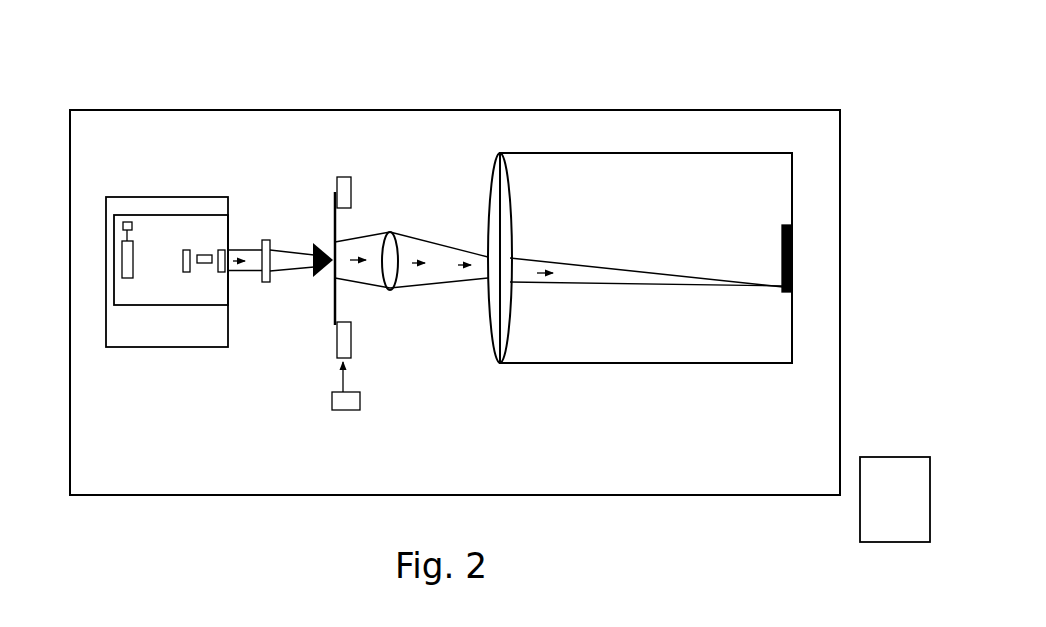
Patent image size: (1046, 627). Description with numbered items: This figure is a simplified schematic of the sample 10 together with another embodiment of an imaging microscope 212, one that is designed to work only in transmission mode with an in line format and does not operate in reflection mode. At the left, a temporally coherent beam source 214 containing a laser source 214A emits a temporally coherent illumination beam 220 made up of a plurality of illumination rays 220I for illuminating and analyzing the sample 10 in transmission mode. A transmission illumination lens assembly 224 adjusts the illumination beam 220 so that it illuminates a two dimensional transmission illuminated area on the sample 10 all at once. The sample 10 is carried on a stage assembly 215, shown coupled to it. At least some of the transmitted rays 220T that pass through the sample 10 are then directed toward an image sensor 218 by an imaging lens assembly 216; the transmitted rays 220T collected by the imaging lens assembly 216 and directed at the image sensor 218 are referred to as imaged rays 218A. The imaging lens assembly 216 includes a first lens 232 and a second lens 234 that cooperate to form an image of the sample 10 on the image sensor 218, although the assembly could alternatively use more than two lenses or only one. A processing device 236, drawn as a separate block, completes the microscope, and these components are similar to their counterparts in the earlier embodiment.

The sample 10 is at (335, 210).
The imaging microscope 212 is at (781, 101).
The temporally coherent beam source 214 is at (187, 336).
The laser source 214A is at (149, 211).
The stage assembly 215 is at (358, 404).
The imaging lens assembly 216 is at (510, 57).
The image sensor 218 is at (793, 240).
The imaged rays 218A is at (548, 275).
The illumination beam 220 is at (243, 273).
The illumination rays 220I is at (242, 255).
The transmitted rays 220T is at (363, 262).
The transmission illumination lens assembly 224 is at (267, 282).
The first lens 232 is at (390, 232).
The second lens 234 is at (491, 155).
The processing device 236 is at (903, 514).